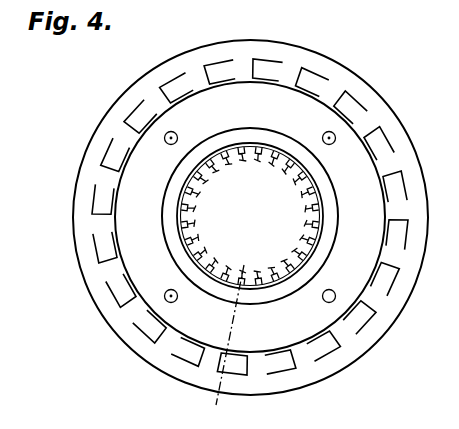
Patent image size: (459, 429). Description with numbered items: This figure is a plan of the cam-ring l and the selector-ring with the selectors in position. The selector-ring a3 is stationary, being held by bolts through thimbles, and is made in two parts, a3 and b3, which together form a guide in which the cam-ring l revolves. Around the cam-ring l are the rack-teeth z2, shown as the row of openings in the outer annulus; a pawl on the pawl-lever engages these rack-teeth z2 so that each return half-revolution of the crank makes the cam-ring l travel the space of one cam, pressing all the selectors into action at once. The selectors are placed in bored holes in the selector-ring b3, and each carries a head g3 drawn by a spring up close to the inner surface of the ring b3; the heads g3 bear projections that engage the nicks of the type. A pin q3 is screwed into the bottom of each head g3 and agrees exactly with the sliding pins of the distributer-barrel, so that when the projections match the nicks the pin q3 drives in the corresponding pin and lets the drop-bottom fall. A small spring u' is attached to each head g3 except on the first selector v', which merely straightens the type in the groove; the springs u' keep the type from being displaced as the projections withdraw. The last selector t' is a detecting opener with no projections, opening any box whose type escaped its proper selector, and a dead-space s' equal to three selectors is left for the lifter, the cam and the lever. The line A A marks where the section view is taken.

The cam-ring l is at (250, 207).
The selector-ring a3 is at (250, 217).
The selector-ring b3 is at (250, 214).
The rack-teeth z2 is at (250, 217).
The head g3 is at (250, 216).
The pin q3 is at (250, 216).
The small spring u' is at (210, 187).
The first selector v' is at (293, 188).
The dead-space s' is at (309, 215).
The last selector t' is at (292, 246).
The section line A A is at (229, 334).